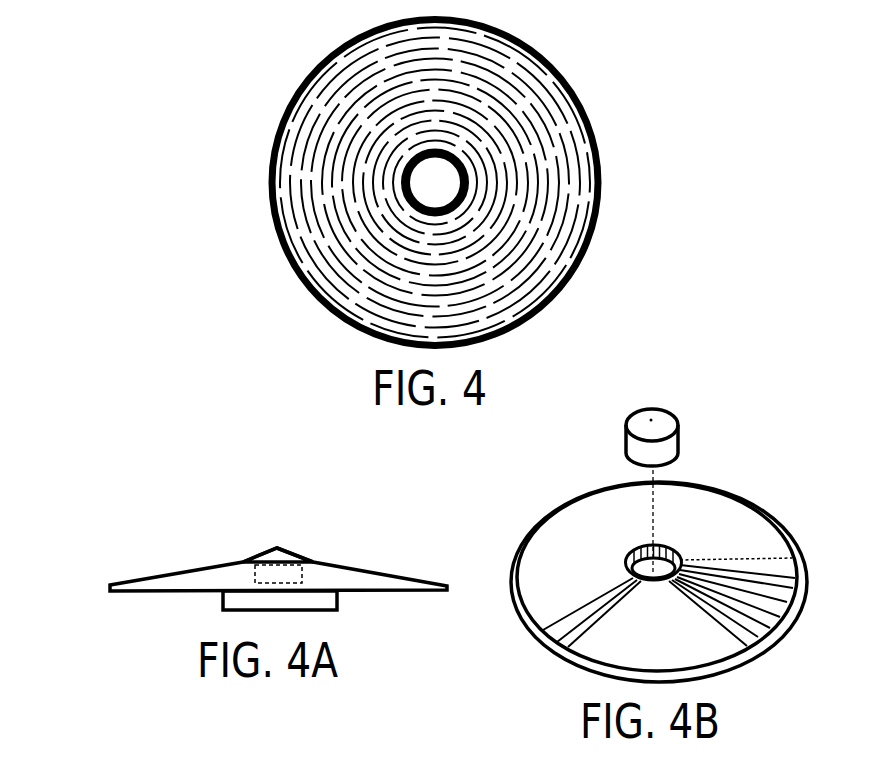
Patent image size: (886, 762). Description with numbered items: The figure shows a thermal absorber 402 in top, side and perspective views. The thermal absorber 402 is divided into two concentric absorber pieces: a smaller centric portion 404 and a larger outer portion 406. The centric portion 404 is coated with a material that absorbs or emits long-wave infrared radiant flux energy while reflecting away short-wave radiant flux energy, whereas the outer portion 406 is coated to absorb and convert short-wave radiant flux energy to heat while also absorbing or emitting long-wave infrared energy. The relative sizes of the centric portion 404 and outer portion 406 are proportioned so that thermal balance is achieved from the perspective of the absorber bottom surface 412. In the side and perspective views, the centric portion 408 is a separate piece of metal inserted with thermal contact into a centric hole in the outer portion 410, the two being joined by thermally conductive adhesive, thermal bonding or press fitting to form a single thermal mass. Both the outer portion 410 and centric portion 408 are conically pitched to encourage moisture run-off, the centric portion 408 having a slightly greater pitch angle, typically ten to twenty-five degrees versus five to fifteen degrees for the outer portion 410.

In FIG. 4, the thermal absorber 402 is at (268, 172).
In FIG. 4, the centric portion 404 is at (468, 176).
In FIG. 4, the outer portion 406 is at (552, 235).
In FIG. 4A, the centric portion 408 is at (297, 553).
In FIG. 4B, the centric portion 408 is at (678, 418).
In FIG. 4A, the outer portion 410 is at (178, 572).
In FIG. 4B, the outer portion 410 is at (543, 622).
In FIG. 4A, the absorber bottom surface 412 is at (222, 602).